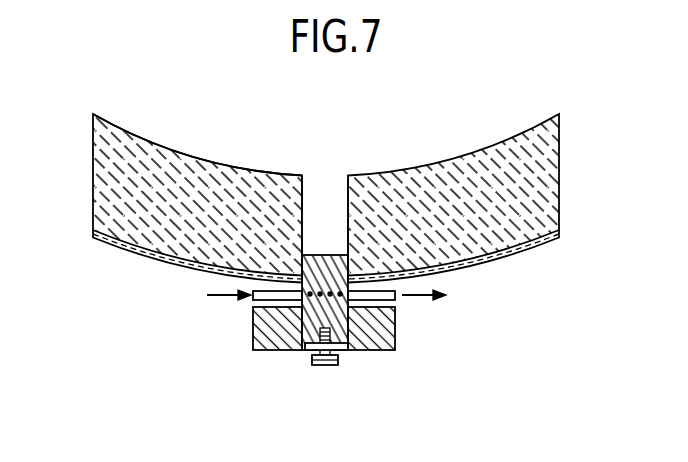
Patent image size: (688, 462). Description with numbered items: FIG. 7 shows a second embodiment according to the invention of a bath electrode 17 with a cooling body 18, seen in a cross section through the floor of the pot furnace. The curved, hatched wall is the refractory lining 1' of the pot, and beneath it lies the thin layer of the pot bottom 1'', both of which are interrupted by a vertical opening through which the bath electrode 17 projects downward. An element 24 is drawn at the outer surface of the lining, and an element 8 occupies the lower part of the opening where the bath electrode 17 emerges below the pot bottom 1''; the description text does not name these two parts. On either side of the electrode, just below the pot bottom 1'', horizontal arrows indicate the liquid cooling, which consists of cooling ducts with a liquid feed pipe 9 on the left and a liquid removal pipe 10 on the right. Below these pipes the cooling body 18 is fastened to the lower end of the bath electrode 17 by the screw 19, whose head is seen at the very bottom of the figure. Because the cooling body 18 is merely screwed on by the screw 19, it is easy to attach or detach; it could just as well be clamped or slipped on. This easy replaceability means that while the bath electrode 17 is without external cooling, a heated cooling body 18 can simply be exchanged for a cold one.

The refractory lining 1' is at (326, 184).
The outer surface of the wall 24 is at (220, 162).
The bath electrode 17 is at (325, 190).
The pot bottom 1'' is at (326, 279).
The sealing plug 8 is at (346, 322).
The liquid feed pipe 9 is at (260, 295).
The liquid removal pipe 10 is at (393, 300).
The cooling body 18 is at (273, 337).
The screw 19 is at (323, 366).